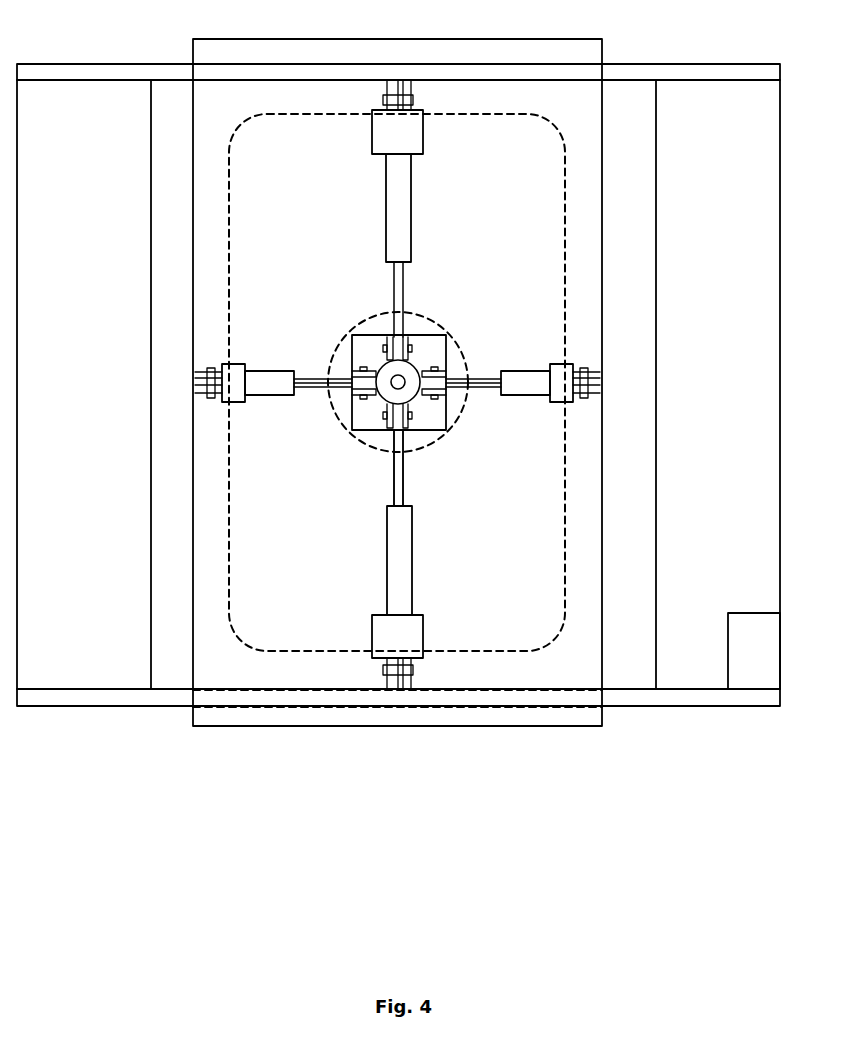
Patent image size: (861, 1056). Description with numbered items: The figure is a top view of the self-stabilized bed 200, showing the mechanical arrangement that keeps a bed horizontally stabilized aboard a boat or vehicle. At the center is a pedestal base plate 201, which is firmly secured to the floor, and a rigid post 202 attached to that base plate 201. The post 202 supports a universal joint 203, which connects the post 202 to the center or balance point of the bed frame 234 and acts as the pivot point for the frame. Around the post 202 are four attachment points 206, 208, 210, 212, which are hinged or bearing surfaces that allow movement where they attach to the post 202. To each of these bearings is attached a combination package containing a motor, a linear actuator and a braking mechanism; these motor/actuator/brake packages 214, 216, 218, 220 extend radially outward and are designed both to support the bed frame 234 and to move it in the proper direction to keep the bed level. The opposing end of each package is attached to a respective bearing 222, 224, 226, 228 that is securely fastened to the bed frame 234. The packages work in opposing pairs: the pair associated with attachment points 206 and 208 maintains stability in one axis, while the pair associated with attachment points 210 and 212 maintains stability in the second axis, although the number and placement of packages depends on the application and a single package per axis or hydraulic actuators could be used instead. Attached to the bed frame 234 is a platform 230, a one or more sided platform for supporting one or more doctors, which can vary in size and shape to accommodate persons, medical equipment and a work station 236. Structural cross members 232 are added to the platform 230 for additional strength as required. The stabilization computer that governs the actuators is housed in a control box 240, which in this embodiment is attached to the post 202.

The self-stabilized bed 200 is at (428, 757).
The pedestal base plate 201 is at (383, 315).
The rigid post 202 is at (408, 398).
The universal joint 203 is at (398, 390).
The attachment point 206 is at (368, 371).
The attachment point 208 is at (435, 371).
The attachment point 210 is at (412, 432).
The attachment point 212 is at (440, 335).
The motor/actuator/brake package 214 is at (283, 393).
The motor/actuator/brake package 216 is at (515, 397).
The motor/actuator/brake package 218 is at (403, 538).
The motor/actuator/brake package 220 is at (405, 240).
The bearing 222 is at (208, 392).
The bearing 224 is at (590, 392).
The bearing 226 is at (390, 103).
The bearing 228 is at (388, 678).
The platform 230 is at (770, 72).
The structural cross members 232 is at (508, 703).
The bed frame 234 is at (592, 44).
The work station 236 is at (765, 650).
The control box 240 is at (386, 430).